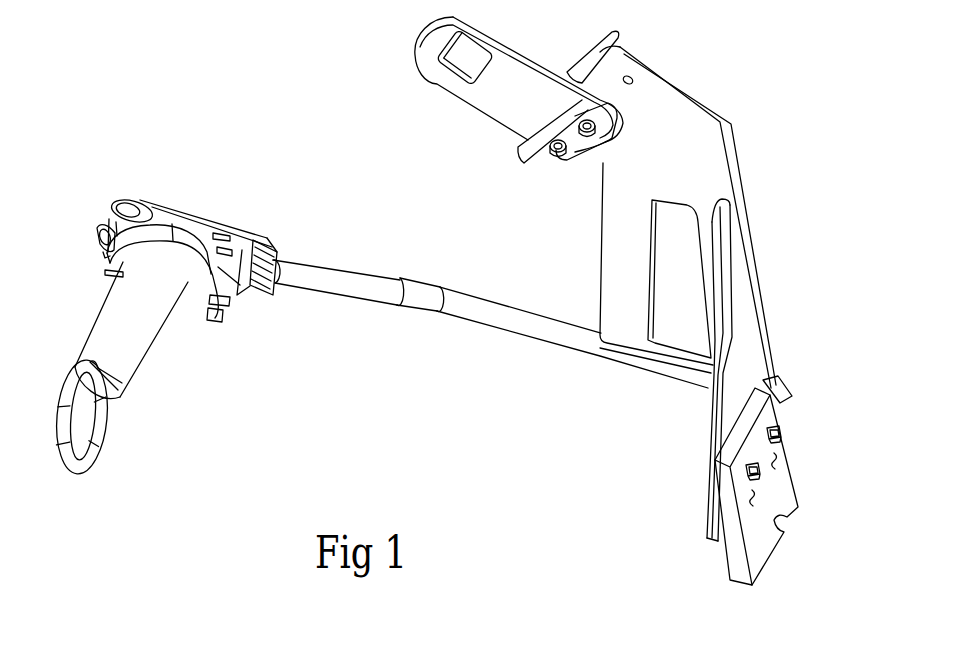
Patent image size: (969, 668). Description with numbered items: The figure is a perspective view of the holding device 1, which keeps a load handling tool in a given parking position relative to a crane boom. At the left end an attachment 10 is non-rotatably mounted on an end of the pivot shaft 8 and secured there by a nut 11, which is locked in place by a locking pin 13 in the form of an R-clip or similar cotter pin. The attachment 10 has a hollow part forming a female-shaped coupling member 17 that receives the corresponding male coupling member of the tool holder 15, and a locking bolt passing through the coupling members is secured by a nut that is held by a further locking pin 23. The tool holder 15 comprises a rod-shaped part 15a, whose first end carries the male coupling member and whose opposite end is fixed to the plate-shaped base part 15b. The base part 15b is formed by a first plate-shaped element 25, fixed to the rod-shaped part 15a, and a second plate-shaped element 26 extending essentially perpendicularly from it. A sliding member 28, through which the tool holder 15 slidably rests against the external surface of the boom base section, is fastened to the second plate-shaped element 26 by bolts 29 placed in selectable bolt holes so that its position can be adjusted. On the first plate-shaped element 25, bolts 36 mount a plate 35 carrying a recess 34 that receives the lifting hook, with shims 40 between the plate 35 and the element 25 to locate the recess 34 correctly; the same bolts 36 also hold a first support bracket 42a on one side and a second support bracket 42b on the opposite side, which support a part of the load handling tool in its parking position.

The holding device 1 is at (300, 88).
The pivot shaft 8 is at (150, 390).
The attachment 10 is at (246, 331).
The nut 11 is at (185, 233).
The locking pin 13 is at (126, 200).
The female-shaped coupling member 17 is at (240, 240).
The locking pin 23 is at (100, 232).
The tool holder 15 is at (530, 387).
The rod-shaped part 15a is at (441, 310).
The base part 15b is at (584, 236).
The first plate-shaped element 25 is at (712, 133).
The second plate-shaped element 26 is at (702, 427).
The sliding member 28 is at (758, 550).
The bolts 29 is at (780, 437).
The recess 34 is at (460, 62).
The plate 35 is at (497, 110).
The bolts 36 is at (590, 136).
The shims 40 is at (623, 110).
The first support bracket 42a is at (518, 150).
The second support bracket 42b is at (585, 58).